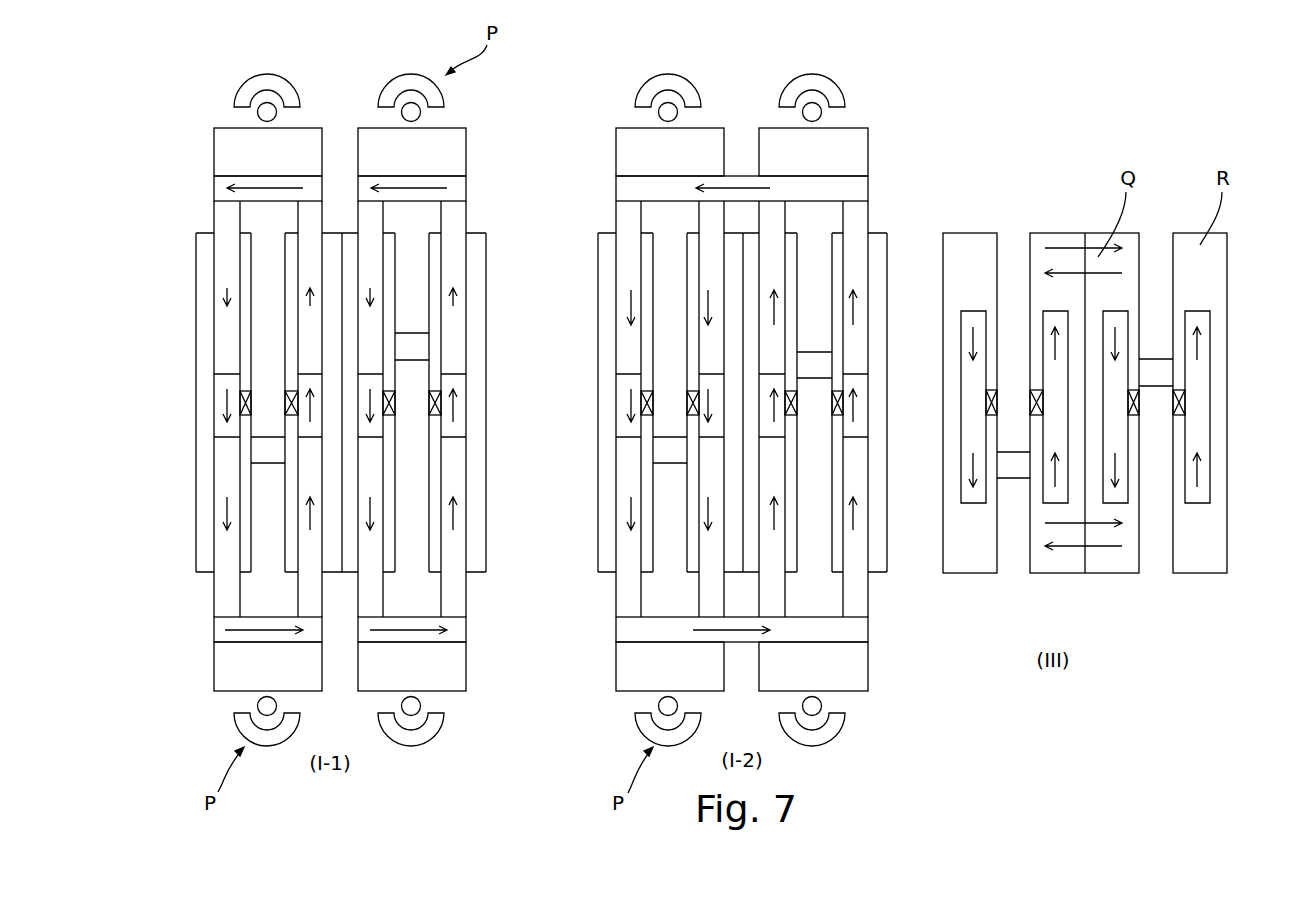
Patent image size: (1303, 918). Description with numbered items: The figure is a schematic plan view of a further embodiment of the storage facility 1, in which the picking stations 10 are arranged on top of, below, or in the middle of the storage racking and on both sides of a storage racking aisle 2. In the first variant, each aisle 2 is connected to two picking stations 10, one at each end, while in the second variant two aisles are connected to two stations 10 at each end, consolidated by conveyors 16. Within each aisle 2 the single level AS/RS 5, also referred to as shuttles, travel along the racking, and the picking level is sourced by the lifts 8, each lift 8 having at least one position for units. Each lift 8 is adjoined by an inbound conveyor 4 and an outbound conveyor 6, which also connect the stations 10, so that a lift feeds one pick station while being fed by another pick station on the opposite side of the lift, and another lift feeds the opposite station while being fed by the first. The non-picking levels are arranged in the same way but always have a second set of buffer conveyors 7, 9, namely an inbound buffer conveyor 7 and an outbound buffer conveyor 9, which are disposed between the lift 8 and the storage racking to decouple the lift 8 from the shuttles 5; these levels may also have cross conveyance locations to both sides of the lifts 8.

The storage facility 1 is at (201, 96).
The storage racking aisle 2 is at (265, 285).
The inbound conveyor 4 is at (228, 250).
The single level AS/RS 5 is at (712, 405).
The outbound conveyor 6 is at (307, 224).
The inbound buffer conveyor 7 is at (1202, 313).
The lift 8 is at (228, 424).
The outbound buffer conveyor 9 is at (1200, 492).
The picking station 10 is at (228, 148).
The conveyor 16 is at (862, 192).